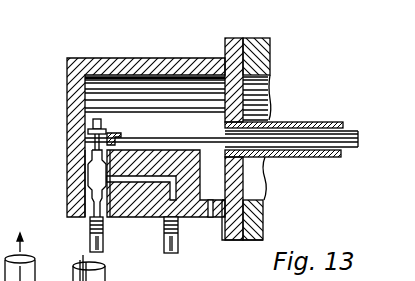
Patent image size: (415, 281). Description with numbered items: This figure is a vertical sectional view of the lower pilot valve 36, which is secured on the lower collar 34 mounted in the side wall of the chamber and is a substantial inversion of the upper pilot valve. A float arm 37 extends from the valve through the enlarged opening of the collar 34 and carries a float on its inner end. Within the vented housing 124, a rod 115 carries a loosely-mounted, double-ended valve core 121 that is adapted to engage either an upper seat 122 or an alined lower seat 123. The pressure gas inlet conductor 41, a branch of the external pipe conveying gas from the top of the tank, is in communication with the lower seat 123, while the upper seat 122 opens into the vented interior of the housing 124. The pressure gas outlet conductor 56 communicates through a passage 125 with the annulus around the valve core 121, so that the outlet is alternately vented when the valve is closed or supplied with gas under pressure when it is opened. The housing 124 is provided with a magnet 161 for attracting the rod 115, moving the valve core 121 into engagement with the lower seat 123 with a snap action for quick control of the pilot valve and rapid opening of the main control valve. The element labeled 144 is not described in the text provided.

The lower pilot valve 36 is at (177, 58).
The lower collar 34 is at (266, 58).
The float arm 37 is at (296, 122).
The vented housing 124 is at (72, 118).
The magnet 161 is at (135, 122).
The rod 115 is at (193, 136).
The upper seat 122 is at (88, 160).
The valve core 121 is at (88, 181).
The lower seat 123 is at (86, 196).
The pressure gas inlet conductor 41 is at (90, 237).
The passage 125 is at (145, 180).
The pressure gas outlet conductor 56 is at (178, 239).
The roller 144 is at (106, 275).